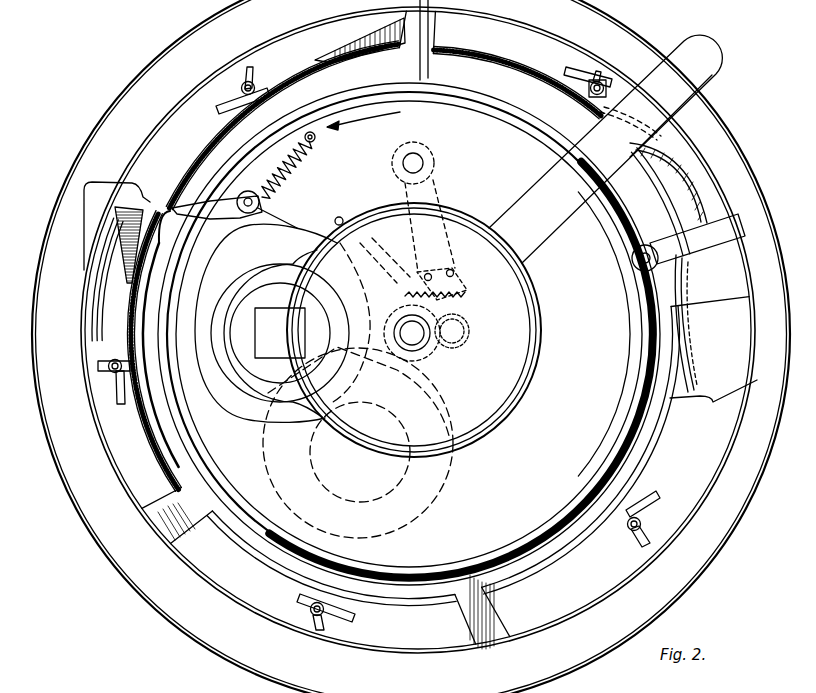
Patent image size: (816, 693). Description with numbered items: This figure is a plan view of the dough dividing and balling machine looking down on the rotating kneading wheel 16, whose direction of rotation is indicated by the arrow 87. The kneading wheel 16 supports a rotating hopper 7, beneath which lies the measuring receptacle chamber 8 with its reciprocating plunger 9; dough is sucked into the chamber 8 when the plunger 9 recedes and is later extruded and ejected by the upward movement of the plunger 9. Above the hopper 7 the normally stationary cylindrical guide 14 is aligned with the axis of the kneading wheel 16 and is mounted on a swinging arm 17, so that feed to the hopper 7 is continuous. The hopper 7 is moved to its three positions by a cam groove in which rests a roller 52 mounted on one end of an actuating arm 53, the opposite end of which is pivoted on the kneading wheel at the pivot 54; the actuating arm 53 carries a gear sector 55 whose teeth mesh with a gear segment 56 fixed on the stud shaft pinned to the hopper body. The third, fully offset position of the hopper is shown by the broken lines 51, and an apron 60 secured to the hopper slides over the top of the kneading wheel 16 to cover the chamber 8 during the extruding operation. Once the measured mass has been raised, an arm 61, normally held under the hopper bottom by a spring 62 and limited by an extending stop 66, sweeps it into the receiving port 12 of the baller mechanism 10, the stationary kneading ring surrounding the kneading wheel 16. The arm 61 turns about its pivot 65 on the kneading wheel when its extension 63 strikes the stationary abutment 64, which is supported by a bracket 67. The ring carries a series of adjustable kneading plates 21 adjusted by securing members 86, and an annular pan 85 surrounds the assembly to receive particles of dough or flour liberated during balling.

The rotating hopper 7 is at (544, 330).
The measuring receptacle chamber 8 is at (272, 308).
The plunger 9 is at (272, 358).
The baller mechanism 10 is at (691, 132).
The receiving port 12 is at (684, 185).
The cylindrical guide 14 is at (544, 312).
The kneading wheel 16 is at (578, 242).
The arm 17 is at (711, 63).
The kneading plates 21 is at (200, 149).
The broken lines 51 is at (443, 488).
The roller 52 is at (465, 321).
The actuating arm 53 is at (439, 182).
The pivot 54 is at (434, 152).
The gear sector 55 is at (465, 284).
The gear segment 56 is at (459, 301).
The apron 60 is at (297, 230).
The arm 61 is at (329, 217).
The spring 62 is at (300, 160).
The extension 63 is at (178, 214).
The abutment 64 is at (642, 264).
The pivot 65 is at (250, 192).
The stop 66 is at (343, 219).
The bracket 67 is at (727, 240).
The annular pan 85 is at (751, 167).
The securing members 86 is at (641, 529).
The arrow 87 is at (385, 112).